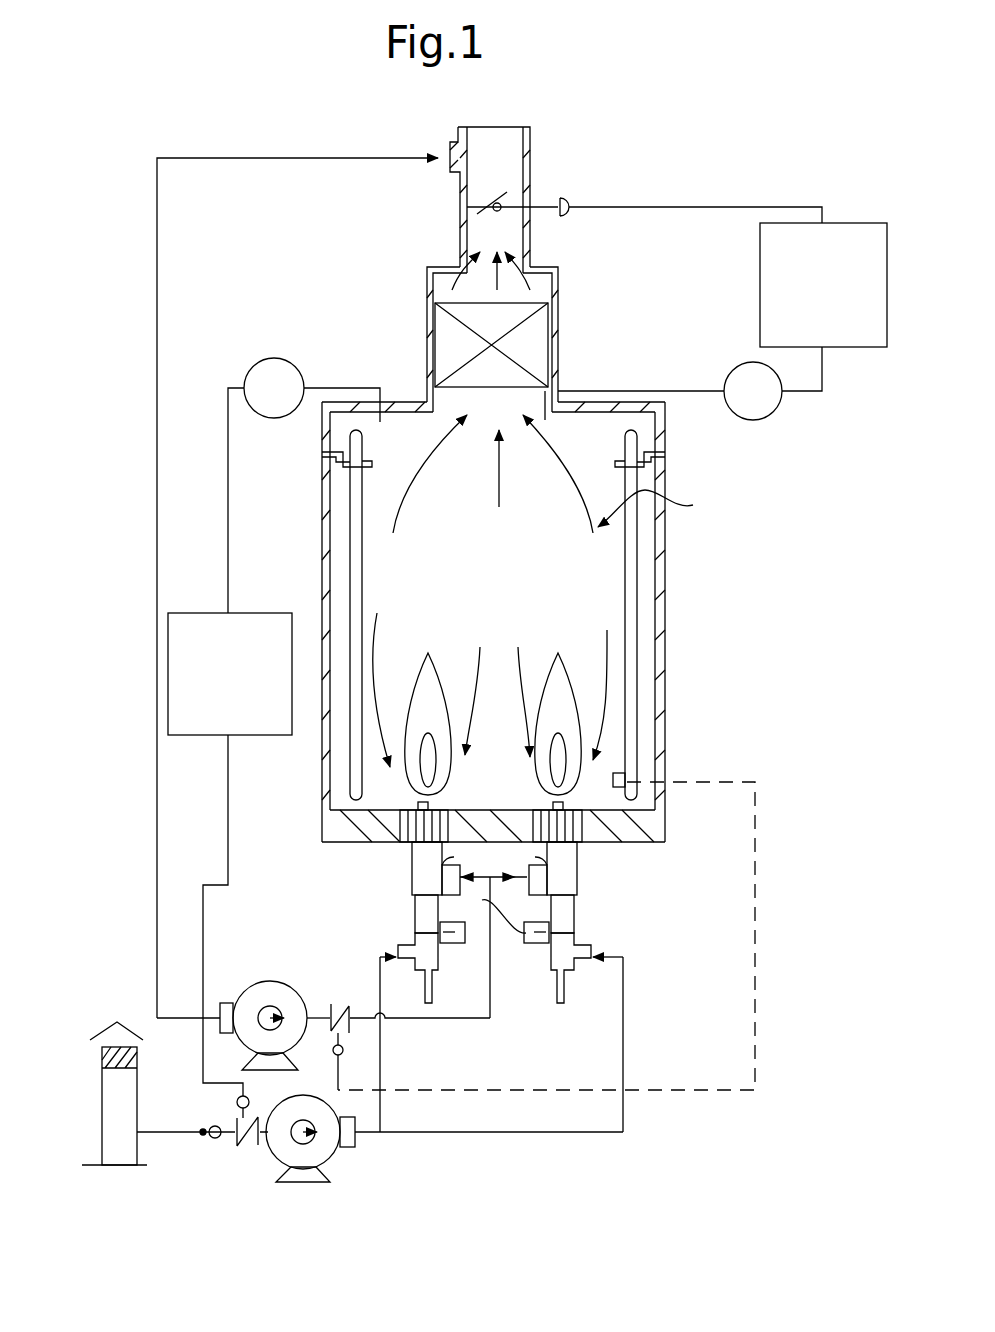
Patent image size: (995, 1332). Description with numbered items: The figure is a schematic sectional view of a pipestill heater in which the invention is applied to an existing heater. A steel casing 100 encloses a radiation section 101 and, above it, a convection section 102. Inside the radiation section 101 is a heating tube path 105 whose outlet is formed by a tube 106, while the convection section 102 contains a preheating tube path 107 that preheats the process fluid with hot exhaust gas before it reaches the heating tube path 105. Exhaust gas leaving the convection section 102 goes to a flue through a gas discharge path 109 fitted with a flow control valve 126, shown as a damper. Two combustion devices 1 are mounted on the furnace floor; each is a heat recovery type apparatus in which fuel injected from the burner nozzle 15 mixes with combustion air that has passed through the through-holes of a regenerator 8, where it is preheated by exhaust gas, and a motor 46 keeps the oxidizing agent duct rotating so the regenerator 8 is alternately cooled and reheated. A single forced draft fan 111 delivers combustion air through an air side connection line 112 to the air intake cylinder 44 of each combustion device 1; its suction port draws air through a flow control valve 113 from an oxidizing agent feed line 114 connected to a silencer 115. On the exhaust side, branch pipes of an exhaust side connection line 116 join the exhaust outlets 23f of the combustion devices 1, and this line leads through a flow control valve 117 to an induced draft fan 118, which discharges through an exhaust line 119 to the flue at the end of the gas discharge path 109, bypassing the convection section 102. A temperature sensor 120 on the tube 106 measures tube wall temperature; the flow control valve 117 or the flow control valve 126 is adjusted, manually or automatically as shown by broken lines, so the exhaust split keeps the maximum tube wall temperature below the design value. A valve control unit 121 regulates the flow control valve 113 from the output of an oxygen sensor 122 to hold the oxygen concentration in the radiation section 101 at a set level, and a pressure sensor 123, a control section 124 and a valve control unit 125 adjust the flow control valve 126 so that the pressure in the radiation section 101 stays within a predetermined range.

The combustion device 1 is at (407, 887).
The regenerator 8 is at (397, 828).
The burner nozzle 15 is at (558, 800).
The exhaust outlet 23f is at (445, 865).
The air intake cylinder 44 is at (403, 947).
The motor 46 is at (534, 945).
The casing 100 is at (663, 608).
The radiation section 101 is at (663, 502).
The convection section 102 is at (558, 263).
The heating tube path 105 is at (350, 587).
The tube 106 is at (637, 555).
The preheating tube path 107 is at (532, 345).
The gas discharge path 109 is at (533, 162).
The forced draft fan 111 is at (320, 1148).
The air side connection line 112 is at (480, 1133).
The flow control valve 113 is at (247, 1147).
The oxidizing agent feed line 114 is at (203, 1138).
The silencer 115 is at (102, 1120).
The exhaust side connection line 116 is at (445, 1020).
The flow control valve 117 is at (338, 1003).
The induced draft fan 118 is at (257, 982).
The exhaust line 119 is at (157, 823).
The temperature sensor 120 is at (624, 752).
The valve control unit 121 is at (200, 613).
The oxygen sensor 122 is at (274, 358).
The pressure sensor 123 is at (770, 413).
The control section 124 is at (567, 197).
The valve control unit 125 is at (843, 223).
The flow control valve 126 is at (487, 198).